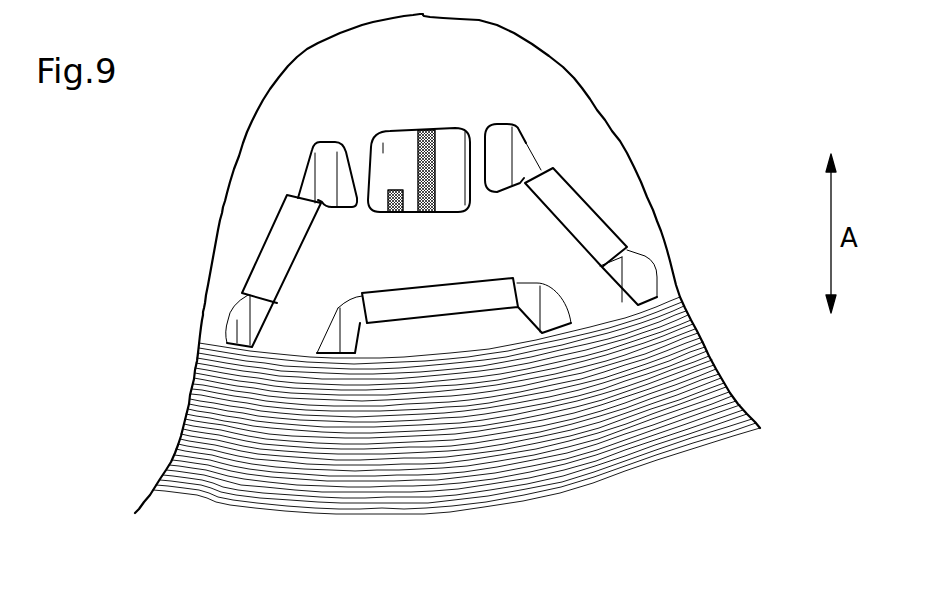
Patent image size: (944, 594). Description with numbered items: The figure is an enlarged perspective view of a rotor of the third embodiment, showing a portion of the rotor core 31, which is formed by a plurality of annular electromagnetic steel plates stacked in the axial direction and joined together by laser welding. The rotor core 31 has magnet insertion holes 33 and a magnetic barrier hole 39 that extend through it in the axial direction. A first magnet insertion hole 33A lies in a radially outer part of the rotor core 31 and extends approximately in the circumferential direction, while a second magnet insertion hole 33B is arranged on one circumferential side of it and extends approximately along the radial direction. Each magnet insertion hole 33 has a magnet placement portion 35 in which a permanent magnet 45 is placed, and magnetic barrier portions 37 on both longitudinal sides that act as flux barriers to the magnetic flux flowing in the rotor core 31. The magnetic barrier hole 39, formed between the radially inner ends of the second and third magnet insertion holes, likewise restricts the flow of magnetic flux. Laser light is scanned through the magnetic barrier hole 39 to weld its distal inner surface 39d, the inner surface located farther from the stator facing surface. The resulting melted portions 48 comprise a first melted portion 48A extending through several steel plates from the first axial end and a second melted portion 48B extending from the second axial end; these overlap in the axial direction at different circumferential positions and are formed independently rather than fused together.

The rotor core 31 is at (224, 521).
The magnet insertion hole 33 is at (330, 374).
The first magnet insertion hole 33A is at (450, 311).
The second magnet insertion hole 33B is at (265, 246).
The magnet placement portion 35 is at (560, 205).
The magnetic barrier portion 37 is at (524, 153).
The magnetic barrier hole 39 is at (454, 145).
The distal inner surface 39d is at (295, 81).
The permanent magnet 45 is at (390, 366).
The melted portion 48 is at (387, 156).
The first melted portion 48A is at (428, 128).
The second melted portion 48B is at (397, 198).